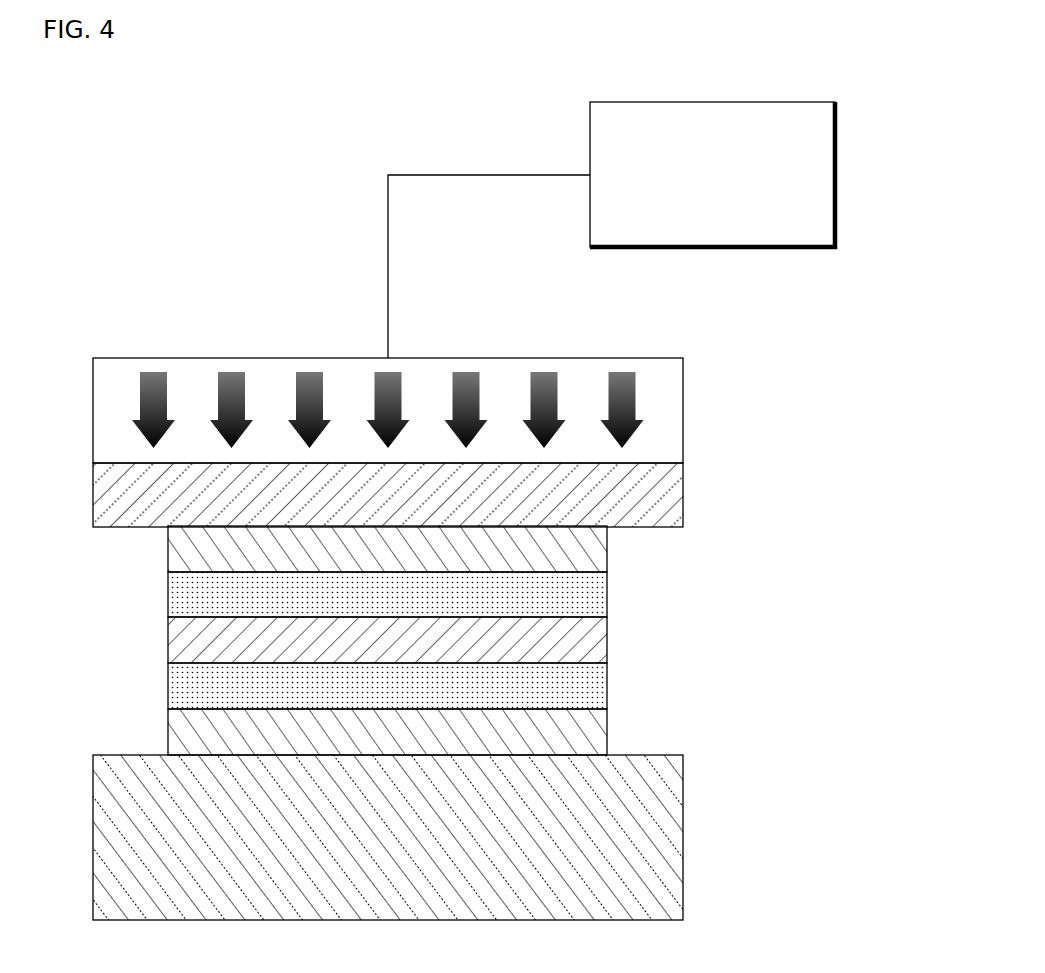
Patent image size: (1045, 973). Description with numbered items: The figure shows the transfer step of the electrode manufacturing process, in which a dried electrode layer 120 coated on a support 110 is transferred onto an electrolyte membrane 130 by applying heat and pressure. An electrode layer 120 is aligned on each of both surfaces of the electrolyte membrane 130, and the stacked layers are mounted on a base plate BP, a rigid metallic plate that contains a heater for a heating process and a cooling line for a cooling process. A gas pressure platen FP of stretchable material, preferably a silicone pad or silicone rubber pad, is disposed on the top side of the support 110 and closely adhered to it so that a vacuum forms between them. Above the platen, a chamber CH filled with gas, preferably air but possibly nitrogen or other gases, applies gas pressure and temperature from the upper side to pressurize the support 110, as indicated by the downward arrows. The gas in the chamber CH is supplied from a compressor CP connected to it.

The compressor CP is at (837, 172).
The chamber CH is at (660, 382).
The gas pressure platen FP is at (660, 493).
The base plate BP is at (660, 838).
The support 110 is at (595, 547).
The electrode layer 120 is at (595, 592).
The electrolyte membrane 130 is at (595, 642).